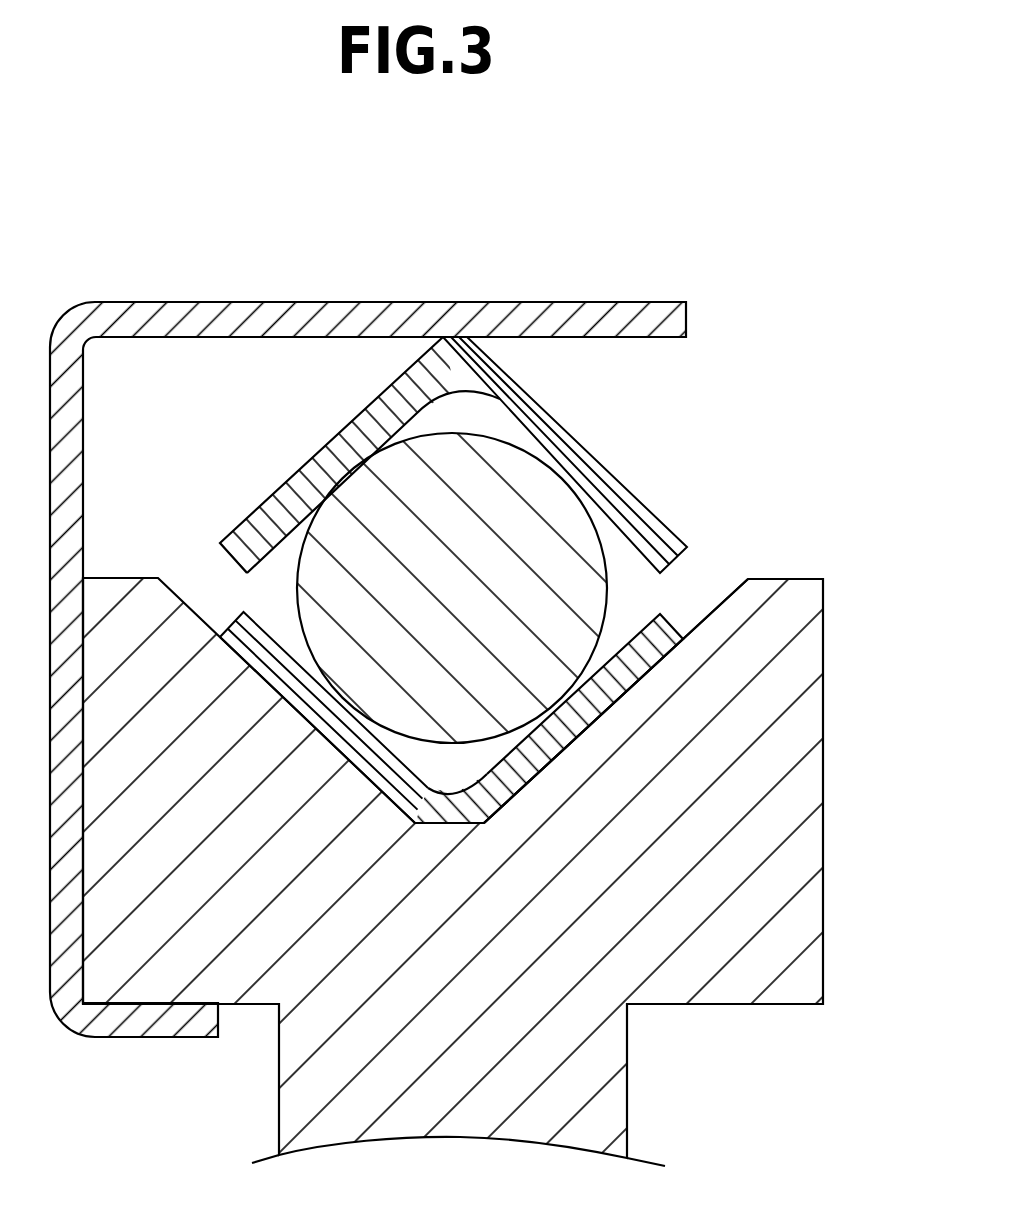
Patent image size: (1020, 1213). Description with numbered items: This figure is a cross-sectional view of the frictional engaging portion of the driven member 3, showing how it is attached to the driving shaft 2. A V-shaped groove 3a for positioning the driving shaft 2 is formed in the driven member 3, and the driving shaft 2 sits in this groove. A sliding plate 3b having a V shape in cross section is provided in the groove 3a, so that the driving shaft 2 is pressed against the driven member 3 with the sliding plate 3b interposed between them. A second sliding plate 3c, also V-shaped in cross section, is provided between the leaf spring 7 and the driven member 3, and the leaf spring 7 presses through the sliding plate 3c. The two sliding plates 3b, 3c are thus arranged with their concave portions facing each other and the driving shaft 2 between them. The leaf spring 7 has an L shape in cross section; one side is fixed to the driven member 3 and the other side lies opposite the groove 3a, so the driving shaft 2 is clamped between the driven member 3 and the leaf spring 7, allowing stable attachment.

The driving shaft 2 is at (563, 503).
The driven member 3 is at (825, 650).
The V-shaped groove 3a is at (720, 603).
The sliding plate 3b is at (237, 617).
The sliding plate 3c is at (287, 483).
The leaf spring 7 is at (307, 316).